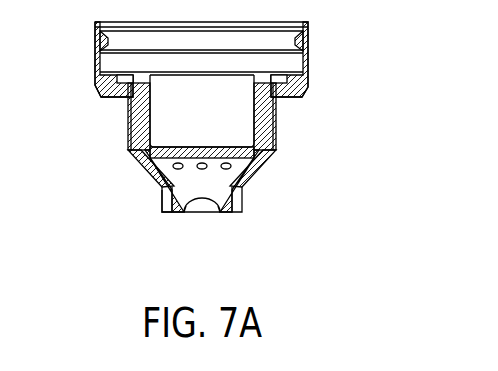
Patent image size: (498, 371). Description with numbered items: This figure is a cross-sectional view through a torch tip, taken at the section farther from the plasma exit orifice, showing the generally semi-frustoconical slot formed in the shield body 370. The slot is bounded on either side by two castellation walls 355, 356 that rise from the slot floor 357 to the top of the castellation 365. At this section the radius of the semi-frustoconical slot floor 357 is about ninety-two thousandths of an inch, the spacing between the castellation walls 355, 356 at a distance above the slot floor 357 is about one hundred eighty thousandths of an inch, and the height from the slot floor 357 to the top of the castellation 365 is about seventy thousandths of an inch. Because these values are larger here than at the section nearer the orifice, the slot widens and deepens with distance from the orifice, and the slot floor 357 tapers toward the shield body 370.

The shield body 370 is at (282, 120).
The slot floor 357 is at (203, 209).
The castellation wall 355 is at (187, 214).
The castellation wall 356 is at (216, 214).
The castellation 365 is at (166, 191).